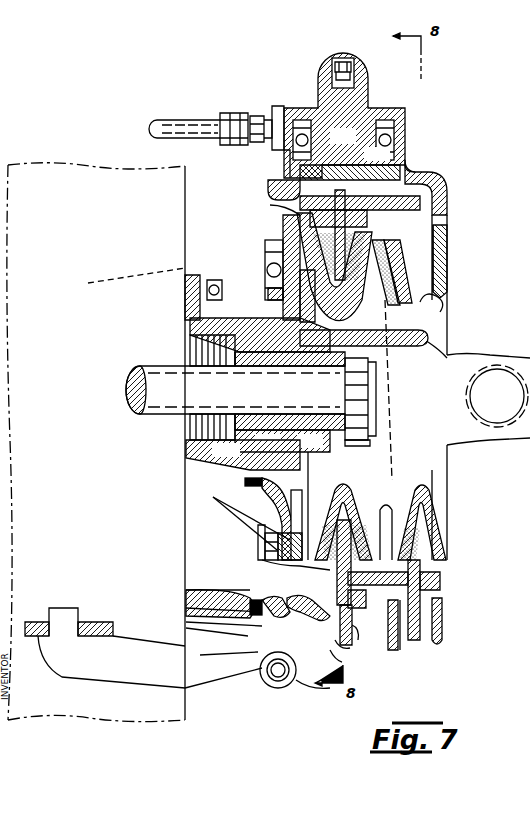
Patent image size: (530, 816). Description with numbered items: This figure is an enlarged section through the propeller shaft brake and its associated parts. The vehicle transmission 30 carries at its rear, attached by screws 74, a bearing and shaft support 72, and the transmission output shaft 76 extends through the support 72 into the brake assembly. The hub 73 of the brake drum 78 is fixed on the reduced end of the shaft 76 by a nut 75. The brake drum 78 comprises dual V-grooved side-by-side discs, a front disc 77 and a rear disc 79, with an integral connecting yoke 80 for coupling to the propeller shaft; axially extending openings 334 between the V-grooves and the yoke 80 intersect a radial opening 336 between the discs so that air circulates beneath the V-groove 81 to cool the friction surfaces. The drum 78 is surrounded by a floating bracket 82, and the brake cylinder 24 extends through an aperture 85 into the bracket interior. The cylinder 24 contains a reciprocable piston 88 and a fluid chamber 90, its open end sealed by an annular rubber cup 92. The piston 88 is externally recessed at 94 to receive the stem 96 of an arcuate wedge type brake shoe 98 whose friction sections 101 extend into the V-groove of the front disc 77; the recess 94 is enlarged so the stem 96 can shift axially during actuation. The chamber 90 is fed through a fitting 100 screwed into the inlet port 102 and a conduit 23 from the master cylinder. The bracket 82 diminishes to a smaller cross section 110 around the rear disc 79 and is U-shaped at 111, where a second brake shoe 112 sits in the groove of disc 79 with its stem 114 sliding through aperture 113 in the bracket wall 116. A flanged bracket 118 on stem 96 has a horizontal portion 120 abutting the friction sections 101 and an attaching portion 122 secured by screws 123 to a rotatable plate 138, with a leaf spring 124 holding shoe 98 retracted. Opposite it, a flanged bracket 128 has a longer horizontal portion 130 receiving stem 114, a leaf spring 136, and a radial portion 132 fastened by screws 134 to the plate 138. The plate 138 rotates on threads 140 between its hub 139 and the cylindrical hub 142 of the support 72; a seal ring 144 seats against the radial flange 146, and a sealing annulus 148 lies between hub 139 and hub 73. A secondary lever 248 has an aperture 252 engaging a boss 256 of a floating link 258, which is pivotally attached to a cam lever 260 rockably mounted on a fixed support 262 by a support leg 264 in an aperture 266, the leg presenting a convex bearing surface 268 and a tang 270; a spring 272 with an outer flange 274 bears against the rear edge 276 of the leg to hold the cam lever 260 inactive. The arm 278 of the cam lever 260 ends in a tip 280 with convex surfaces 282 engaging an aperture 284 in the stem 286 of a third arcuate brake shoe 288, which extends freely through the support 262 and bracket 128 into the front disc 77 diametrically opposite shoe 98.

The conduit 23 is at (170, 124).
The brake cylinder 24 is at (371, 108).
The vehicle transmission 30 is at (170, 190).
The bearing and shaft support 72 is at (196, 275).
The hub 73 is at (292, 368).
The screws 74 is at (216, 280).
The nut 75 is at (372, 406).
The transmission output shaft 76 is at (168, 420).
The front disc 77 is at (342, 310).
The brake drum 78 is at (447, 250).
The rear disc 79 is at (442, 306).
The connecting yoke 80 is at (462, 368).
The V-groove 81 is at (448, 272).
The floating bracket 82 is at (441, 182).
The aperture 85 is at (410, 168).
The piston 88 is at (290, 172).
The fluid chamber 90 is at (300, 112).
The annular rubber cup 92 is at (278, 190).
The recess 94 is at (360, 178).
The stem 96 is at (343, 136).
The arcuate wedge type brake shoe 98 is at (378, 244).
The fitting 100 is at (246, 118).
The friction sections 101 is at (392, 268).
The inlet port 102 is at (268, 112).
The smaller cross section 110 is at (443, 634).
The U-shaped portion 111 is at (403, 635).
The brake shoe 112 is at (448, 556).
The aperture 113 is at (428, 632).
The stem 114 is at (430, 601).
The bracket wall 116 is at (378, 608).
The flanged bracket 118 is at (272, 262).
The horizontal portion 120 is at (292, 225).
The attaching portion 122 is at (328, 280).
The screws 123 is at (268, 270).
The leaf spring 124 is at (363, 218).
The flanged bracket 128 is at (278, 618).
The horizontal portion 130 is at (440, 578).
The radial portion 132 is at (266, 534).
The screws 134 is at (260, 540).
The leaf spring 136 is at (441, 585).
The rotatable plate 138 is at (284, 496).
The hub 139 is at (340, 488).
The threads 140 is at (311, 441).
The cylindrical hub 142 is at (232, 502).
The seal ring 144 is at (243, 450).
The radial flange 146 is at (190, 323).
The sealing annulus 148 is at (357, 430).
The secondary lever 248 is at (98, 622).
The aperture 252 is at (48, 630).
The boss 256 is at (70, 618).
The floating link 258 is at (118, 664).
The cam lever 260 is at (256, 662).
The support 262 is at (186, 594).
The support leg 264 is at (266, 562).
The aperture 266 is at (246, 638).
The convex bearing surface 268 is at (295, 670).
The tang 270 is at (290, 620).
The spring 272 is at (186, 612).
The outer flange 274 is at (186, 623).
The rear edge 276 is at (262, 580).
The arm 278 is at (344, 664).
The tip 280 is at (350, 650).
The convex surfaces 282 is at (350, 638).
The aperture 284 is at (329, 697).
The stem 286 is at (345, 618).
The arcuate brake shoe 288 is at (384, 500).
The axially extending openings 334 is at (428, 332).
The radial opening 336 is at (376, 310).